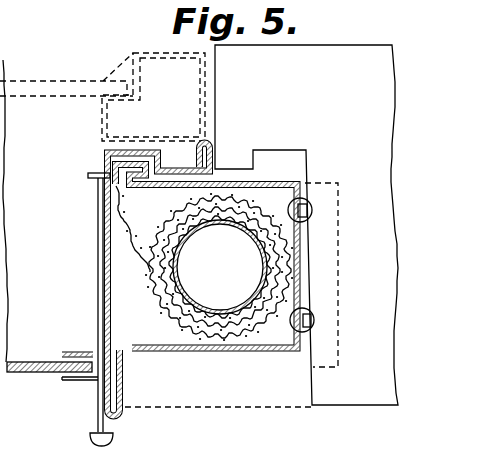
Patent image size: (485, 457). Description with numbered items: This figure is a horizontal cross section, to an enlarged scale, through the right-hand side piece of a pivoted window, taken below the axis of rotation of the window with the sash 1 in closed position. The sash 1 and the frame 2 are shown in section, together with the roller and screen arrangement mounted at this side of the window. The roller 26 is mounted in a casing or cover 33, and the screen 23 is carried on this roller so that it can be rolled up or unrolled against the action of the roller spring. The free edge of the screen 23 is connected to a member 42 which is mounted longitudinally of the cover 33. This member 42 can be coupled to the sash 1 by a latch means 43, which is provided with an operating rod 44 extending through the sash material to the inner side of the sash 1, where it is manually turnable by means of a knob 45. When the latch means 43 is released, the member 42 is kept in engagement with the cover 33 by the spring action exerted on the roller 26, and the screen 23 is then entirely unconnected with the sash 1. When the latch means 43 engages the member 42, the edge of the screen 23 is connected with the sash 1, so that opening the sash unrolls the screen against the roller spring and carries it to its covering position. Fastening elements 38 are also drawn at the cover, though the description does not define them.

The sash 1 is at (98, 282).
The frame 2 is at (286, 53).
The screen 23 is at (140, 238).
The roller 26 is at (220, 334).
The cover 33 is at (276, 351).
The bolts 38 is at (312, 200).
The member 42 is at (124, 151).
The latch means 43 is at (99, 174).
The operating rod 44 is at (100, 346).
The knob 45 is at (108, 443).